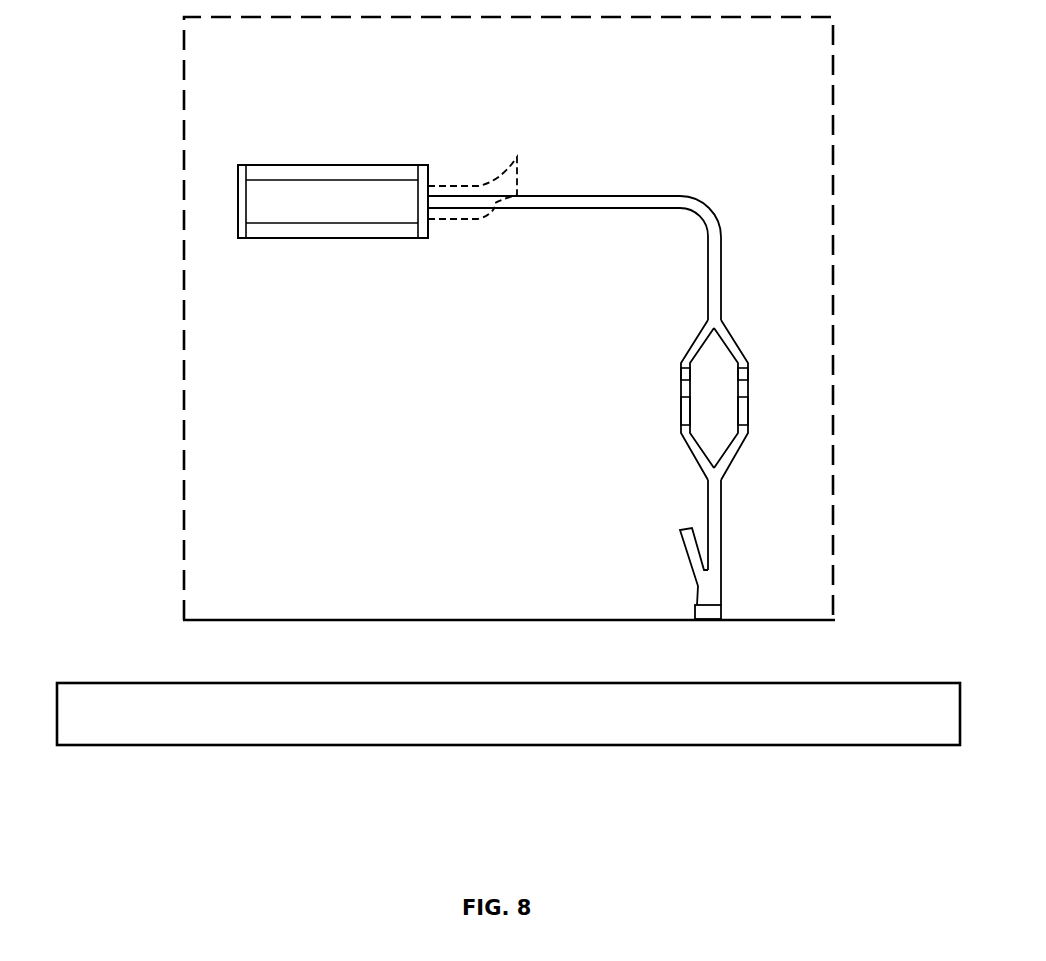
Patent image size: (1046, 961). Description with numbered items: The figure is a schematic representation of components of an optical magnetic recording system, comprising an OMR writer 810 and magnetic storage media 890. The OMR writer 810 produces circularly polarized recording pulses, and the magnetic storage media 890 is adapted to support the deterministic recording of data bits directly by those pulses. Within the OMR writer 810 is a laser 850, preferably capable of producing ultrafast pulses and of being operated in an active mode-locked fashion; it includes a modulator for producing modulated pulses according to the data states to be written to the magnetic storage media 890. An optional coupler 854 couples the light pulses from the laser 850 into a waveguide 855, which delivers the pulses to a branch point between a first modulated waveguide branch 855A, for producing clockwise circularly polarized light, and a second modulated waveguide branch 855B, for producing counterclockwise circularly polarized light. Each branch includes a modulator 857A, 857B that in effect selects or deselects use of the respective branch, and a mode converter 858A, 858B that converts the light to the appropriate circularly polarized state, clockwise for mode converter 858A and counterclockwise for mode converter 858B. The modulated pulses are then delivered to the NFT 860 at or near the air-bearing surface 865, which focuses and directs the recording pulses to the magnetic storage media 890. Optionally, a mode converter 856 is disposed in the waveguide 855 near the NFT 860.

The OMR writer 810 is at (132, 248).
The laser 850 is at (330, 138).
The coupler 854 is at (480, 183).
The waveguide 855 is at (708, 264).
The first modulated waveguide branch 855A is at (698, 343).
The second modulated waveguide branch 855B is at (725, 342).
The modulator 857A is at (682, 377).
The modulator 857B is at (747, 377).
The mode converter 858A is at (682, 415).
The mode converter 858B is at (747, 415).
The mode converter 856 is at (683, 542).
The NFT 860 is at (698, 613).
The air-bearing surface 865 is at (495, 623).
The magnetic storage media 890 is at (744, 730).